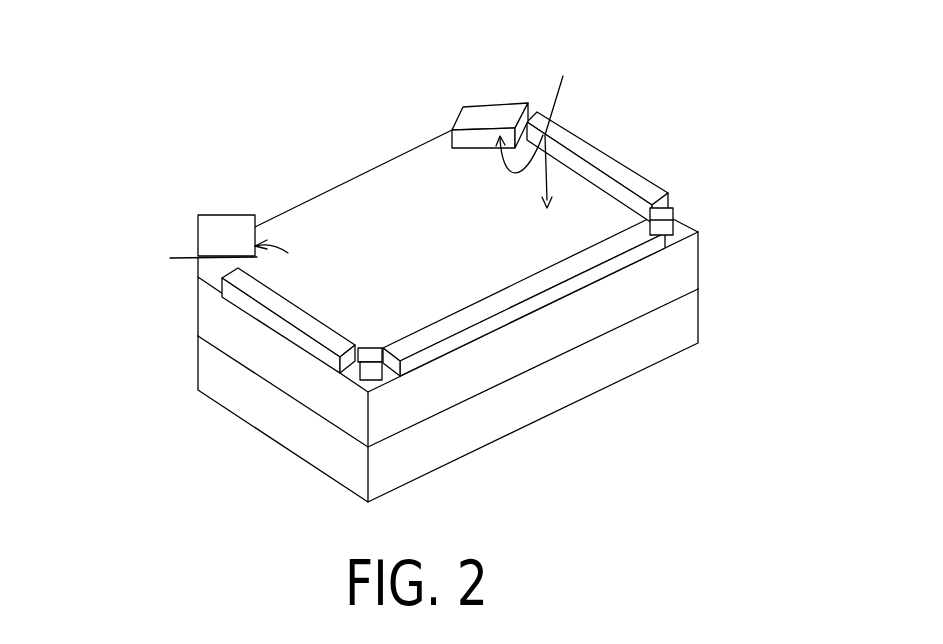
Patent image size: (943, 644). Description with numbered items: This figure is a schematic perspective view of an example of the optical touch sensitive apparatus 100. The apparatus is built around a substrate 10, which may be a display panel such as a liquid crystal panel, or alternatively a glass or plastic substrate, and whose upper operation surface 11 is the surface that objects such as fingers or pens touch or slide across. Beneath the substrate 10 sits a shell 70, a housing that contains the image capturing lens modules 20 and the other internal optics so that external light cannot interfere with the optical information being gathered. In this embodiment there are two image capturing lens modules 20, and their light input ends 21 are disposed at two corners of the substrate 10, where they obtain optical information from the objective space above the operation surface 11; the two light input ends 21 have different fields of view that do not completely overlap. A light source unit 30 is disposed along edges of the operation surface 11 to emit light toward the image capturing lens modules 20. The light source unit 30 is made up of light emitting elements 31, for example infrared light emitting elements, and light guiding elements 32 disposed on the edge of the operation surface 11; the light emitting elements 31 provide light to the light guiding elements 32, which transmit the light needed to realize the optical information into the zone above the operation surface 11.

The optical touch sensitive apparatus 100 is at (432, 271).
The substrate 10 is at (690, 263).
The shell 70 is at (690, 323).
The operation surface 11 is at (570, 140).
The image capturing lens module 20 is at (491, 114).
The light input end 21 is at (356, 161).
The light source unit 30 is at (370, 323).
The light emitting element 31 is at (358, 365).
The light guiding element 32 is at (243, 303).